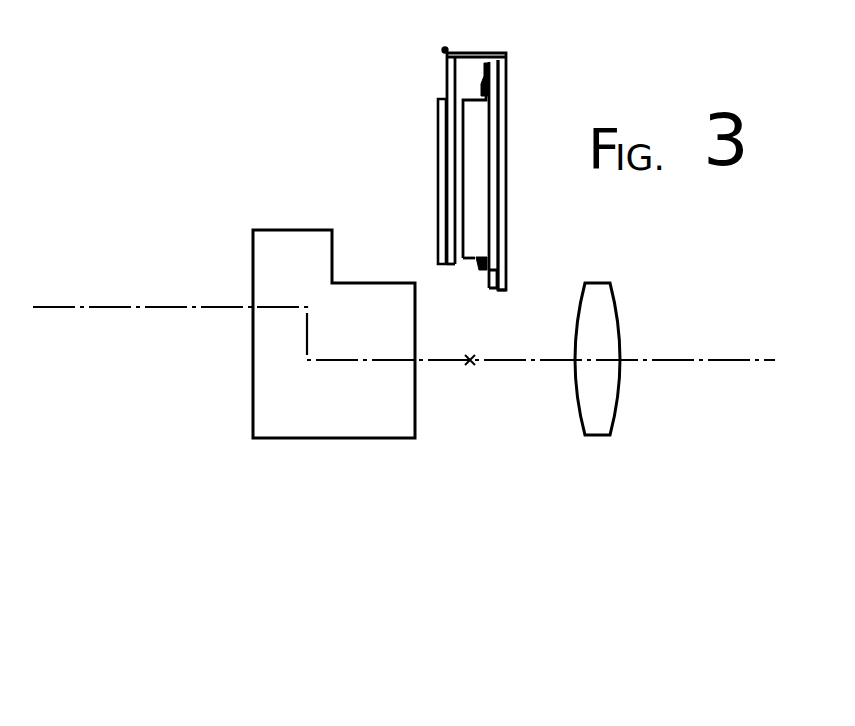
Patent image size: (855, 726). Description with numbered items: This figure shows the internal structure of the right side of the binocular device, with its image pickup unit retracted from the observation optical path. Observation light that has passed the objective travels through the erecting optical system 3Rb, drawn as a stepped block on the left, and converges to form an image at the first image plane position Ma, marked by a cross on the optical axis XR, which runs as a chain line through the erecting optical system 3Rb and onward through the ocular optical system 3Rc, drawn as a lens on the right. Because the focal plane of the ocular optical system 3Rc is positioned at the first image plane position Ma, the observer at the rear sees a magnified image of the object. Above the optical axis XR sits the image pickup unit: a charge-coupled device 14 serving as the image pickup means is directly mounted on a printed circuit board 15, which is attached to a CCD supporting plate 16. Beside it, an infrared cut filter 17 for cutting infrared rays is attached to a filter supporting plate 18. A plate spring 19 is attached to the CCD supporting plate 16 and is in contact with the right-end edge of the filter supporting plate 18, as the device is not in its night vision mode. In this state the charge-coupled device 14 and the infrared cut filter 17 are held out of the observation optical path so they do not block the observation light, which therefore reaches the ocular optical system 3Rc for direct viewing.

The charge-coupled device 14 is at (473, 264).
The printed circuit board 15 is at (494, 279).
The CCD supporting plate 16 is at (503, 270).
The infrared cut filter 17 is at (440, 123).
The filter supporting plate 18 is at (448, 73).
The plate spring 19 is at (477, 53).
The erecting optical system 3Rb is at (268, 360).
The ocular optical system 3Rc is at (605, 378).
The first image plane position Ma is at (475, 362).
The optical axis XR is at (680, 357).